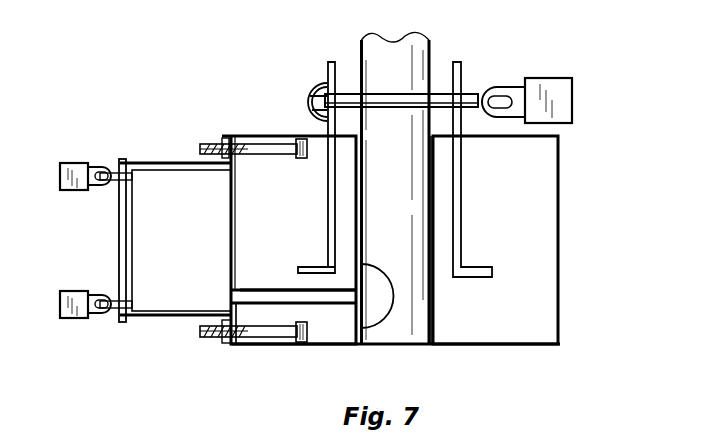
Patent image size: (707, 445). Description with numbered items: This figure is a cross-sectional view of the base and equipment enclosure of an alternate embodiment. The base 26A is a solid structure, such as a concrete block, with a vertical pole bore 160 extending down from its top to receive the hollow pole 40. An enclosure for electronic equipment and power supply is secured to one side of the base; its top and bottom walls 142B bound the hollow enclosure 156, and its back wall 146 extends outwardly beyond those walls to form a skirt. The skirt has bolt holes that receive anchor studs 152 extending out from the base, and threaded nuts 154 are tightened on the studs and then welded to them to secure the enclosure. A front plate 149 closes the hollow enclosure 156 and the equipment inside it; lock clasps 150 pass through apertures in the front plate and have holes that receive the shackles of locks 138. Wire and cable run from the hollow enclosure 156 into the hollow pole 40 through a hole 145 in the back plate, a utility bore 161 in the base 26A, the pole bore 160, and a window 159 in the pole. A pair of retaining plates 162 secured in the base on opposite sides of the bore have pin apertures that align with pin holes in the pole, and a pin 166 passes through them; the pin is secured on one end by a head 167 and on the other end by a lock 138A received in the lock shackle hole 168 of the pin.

The hollow pole 40 is at (360, 56).
The pin 166 is at (392, 94).
The head 167 is at (309, 100).
The retaining plates 162 is at (456, 62).
The lock shackle hole 168 is at (490, 92).
The lock 138A is at (573, 100).
The base 26A is at (531, 219).
The utility bore 161 is at (258, 289).
The pole bore 160 is at (435, 312).
The window 159 is at (390, 260).
The hollow enclosure 156 is at (196, 253).
The top and bottom walls 142B is at (170, 173).
The front plate 149 is at (118, 241).
The locks 138 is at (76, 162).
The lock clasps 150 is at (118, 300).
The back wall 146 is at (226, 137).
The anchor studs 152 is at (281, 344).
The threaded nuts 154 is at (225, 345).
The hole 145 is at (228, 301).